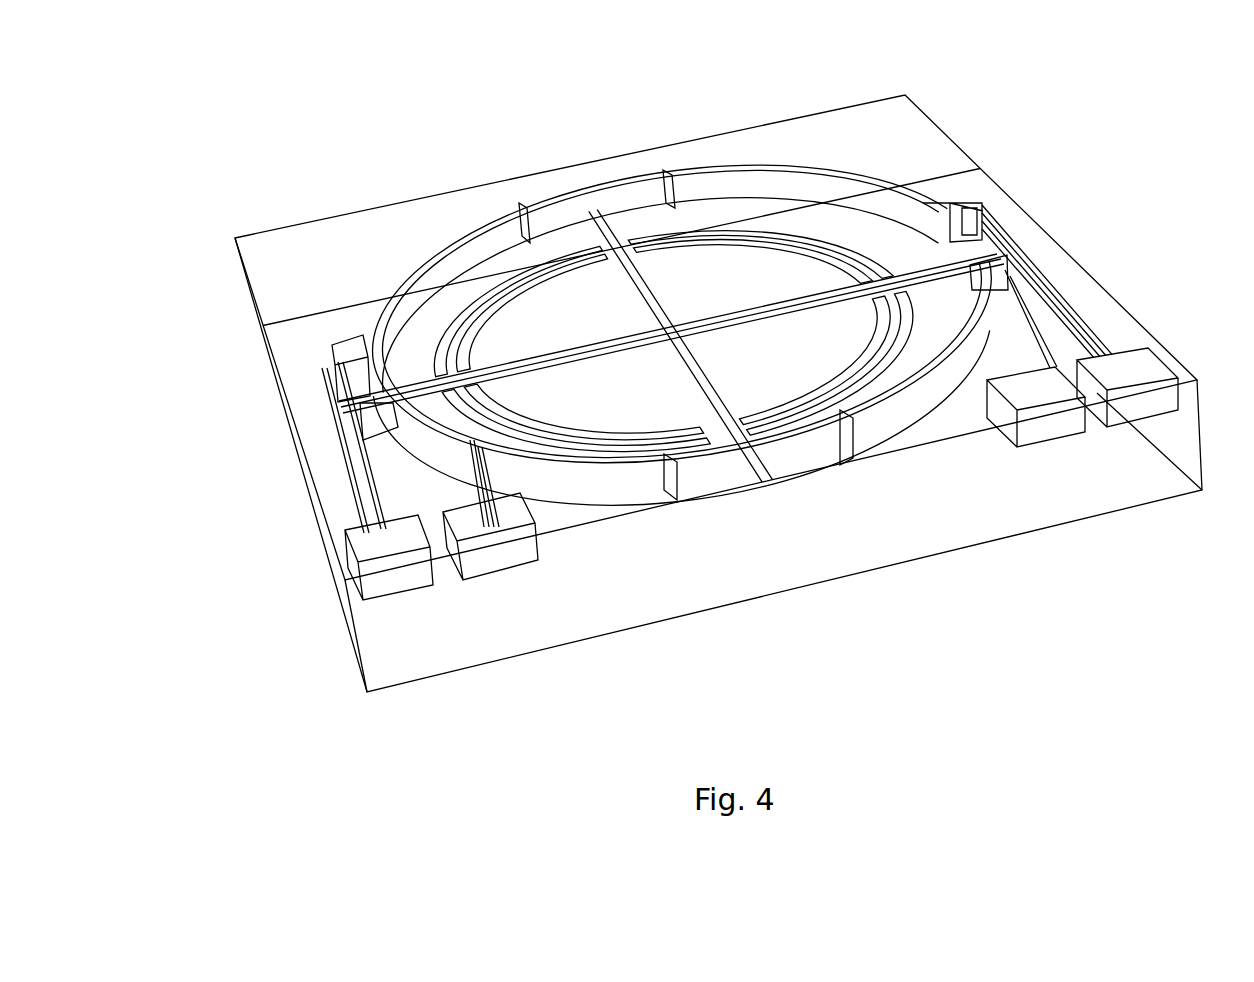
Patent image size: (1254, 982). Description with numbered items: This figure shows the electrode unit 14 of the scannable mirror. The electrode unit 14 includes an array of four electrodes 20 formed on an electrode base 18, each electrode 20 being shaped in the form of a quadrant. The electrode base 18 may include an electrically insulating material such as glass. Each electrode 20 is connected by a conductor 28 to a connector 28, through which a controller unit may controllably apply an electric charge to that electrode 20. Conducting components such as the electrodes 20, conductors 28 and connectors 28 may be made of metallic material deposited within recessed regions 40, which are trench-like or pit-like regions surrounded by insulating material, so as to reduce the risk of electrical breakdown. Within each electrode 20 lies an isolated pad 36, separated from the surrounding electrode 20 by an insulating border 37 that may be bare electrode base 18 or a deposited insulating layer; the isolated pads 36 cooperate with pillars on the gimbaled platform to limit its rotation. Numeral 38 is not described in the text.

The electrode unit 14 is at (285, 105).
The electrode base 18 is at (1008, 531).
The electrode 20 is at (752, 362).
The conductor 28 is at (1125, 392).
The isolated pad 36 is at (902, 278).
The insulating border 37 is at (745, 415).
The conductive traces 38 is at (1051, 300).
The recessed region 40 is at (650, 185).